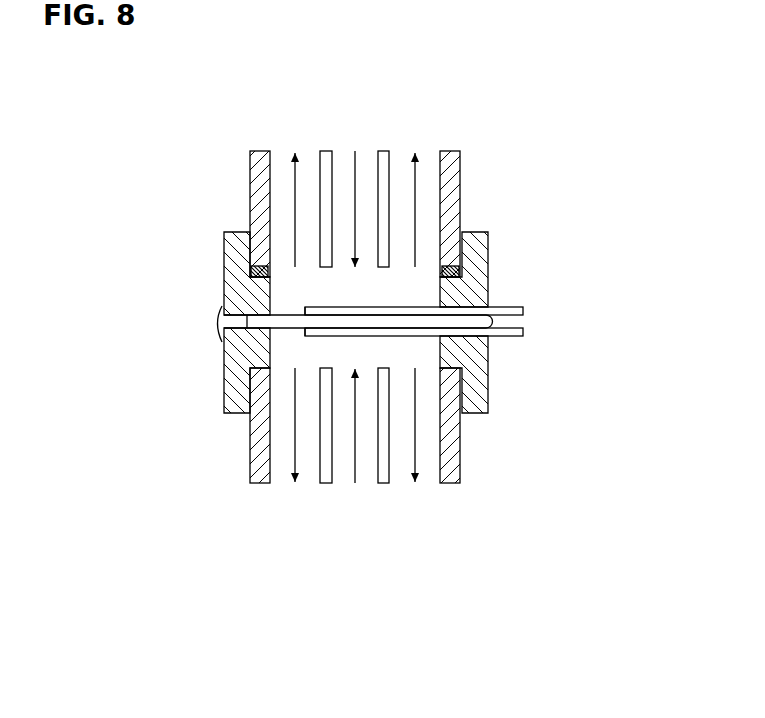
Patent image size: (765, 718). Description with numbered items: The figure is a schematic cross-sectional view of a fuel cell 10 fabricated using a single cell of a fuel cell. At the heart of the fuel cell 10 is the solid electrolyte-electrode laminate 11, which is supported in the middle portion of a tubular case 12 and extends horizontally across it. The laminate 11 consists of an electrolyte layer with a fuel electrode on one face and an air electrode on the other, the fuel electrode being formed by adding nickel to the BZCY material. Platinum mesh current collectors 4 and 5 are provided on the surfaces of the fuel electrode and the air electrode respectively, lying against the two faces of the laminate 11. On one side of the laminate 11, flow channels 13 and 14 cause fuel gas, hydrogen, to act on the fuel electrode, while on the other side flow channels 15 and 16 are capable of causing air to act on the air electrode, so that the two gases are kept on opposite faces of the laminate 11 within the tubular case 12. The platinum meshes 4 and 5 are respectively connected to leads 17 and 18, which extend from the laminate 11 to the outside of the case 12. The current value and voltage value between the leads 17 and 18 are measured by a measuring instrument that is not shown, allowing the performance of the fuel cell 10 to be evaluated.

The fuel cell 10 is at (255, 573).
The current collector 4 is at (325, 336).
The current collector 5 is at (313, 307).
The solid electrolyte-electrode laminate 11 is at (292, 328).
The tubular case 12 is at (487, 382).
The flow channel 13 is at (377, 472).
The flow channel 14 is at (270, 468).
The flow channel 15 is at (378, 162).
The flow channel 16 is at (270, 173).
The lead 17 is at (512, 336).
The lead 18 is at (510, 307).